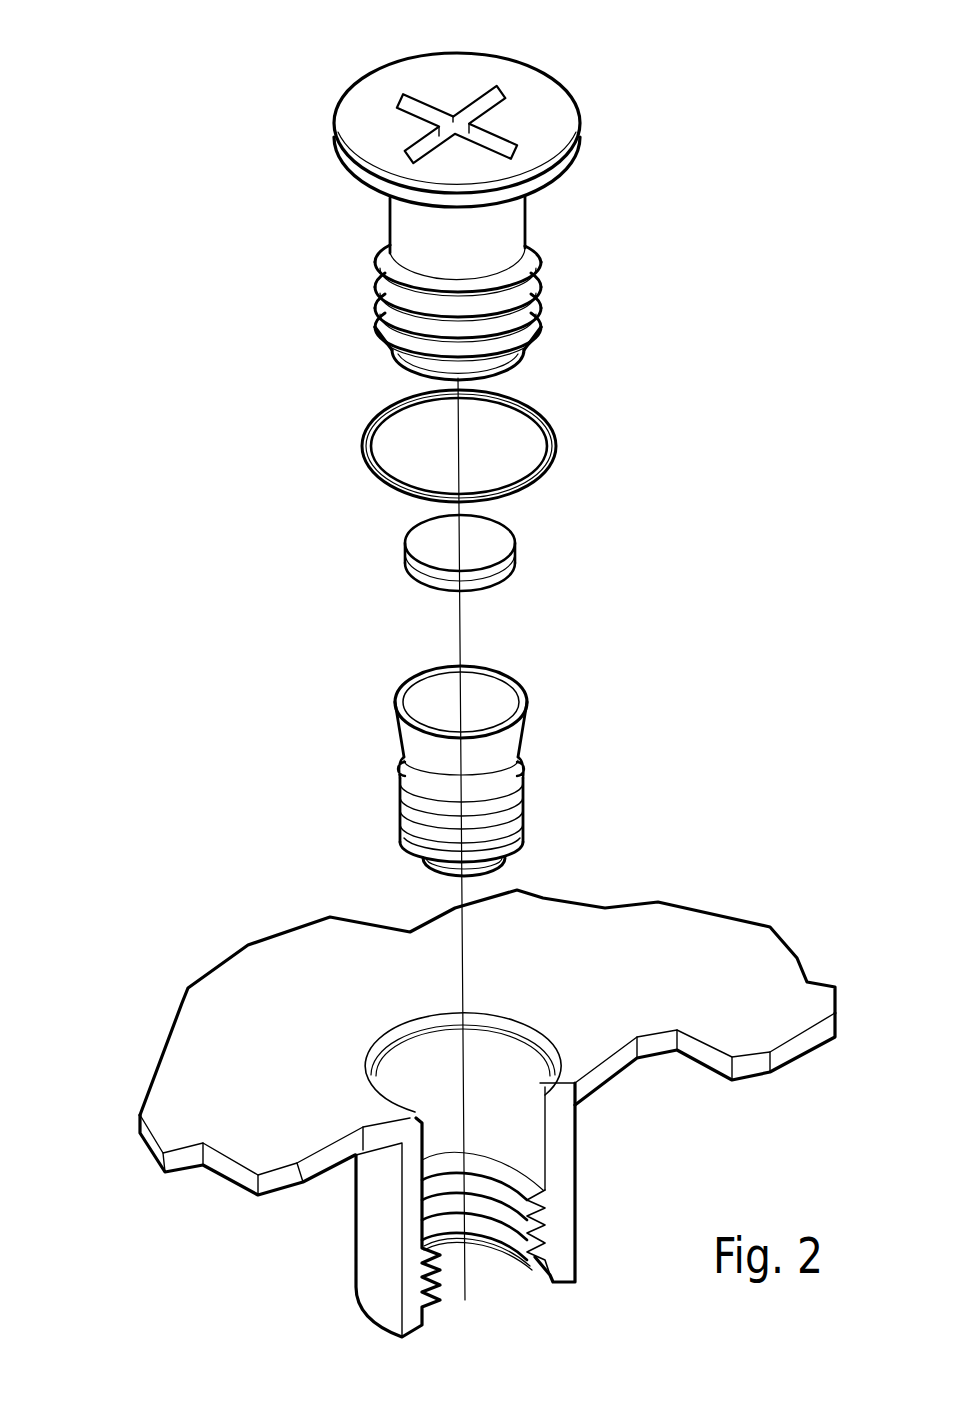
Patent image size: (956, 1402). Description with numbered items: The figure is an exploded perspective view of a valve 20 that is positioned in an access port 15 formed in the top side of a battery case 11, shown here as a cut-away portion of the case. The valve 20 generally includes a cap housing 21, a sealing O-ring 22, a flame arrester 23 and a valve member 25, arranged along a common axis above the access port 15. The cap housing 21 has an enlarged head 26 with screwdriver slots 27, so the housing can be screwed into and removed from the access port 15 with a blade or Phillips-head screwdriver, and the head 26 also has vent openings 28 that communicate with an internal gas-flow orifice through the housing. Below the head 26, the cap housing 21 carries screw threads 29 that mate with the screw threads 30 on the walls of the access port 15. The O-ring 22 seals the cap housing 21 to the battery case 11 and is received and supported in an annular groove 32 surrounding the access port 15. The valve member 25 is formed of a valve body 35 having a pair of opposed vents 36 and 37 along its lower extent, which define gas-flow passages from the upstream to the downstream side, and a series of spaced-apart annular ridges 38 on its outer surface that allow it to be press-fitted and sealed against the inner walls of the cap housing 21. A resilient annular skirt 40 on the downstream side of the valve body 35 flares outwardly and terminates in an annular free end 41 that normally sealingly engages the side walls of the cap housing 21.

The valve 20 is at (150, 305).
The enlarged head 26 is at (550, 113).
The screwdriver slots 27 is at (495, 145).
The vent openings 28 is at (495, 105).
The cap housing 21 is at (497, 220).
The screw threads 29 is at (520, 320).
The sealing O-ring 22 is at (555, 450).
The flame arrester 23 is at (485, 545).
The valve member 25 is at (318, 726).
The annular free end 41 is at (505, 665).
The annular skirt 40 is at (430, 705).
The vent 37 is at (400, 762).
The vent 36 is at (527, 774).
The valve body 35 is at (527, 827).
The annular ridges 38 is at (400, 837).
The battery case 11 is at (203, 1090).
The annular groove 32 is at (370, 1050).
The access port 15 is at (517, 1097).
The screw threads 30 is at (530, 1213).